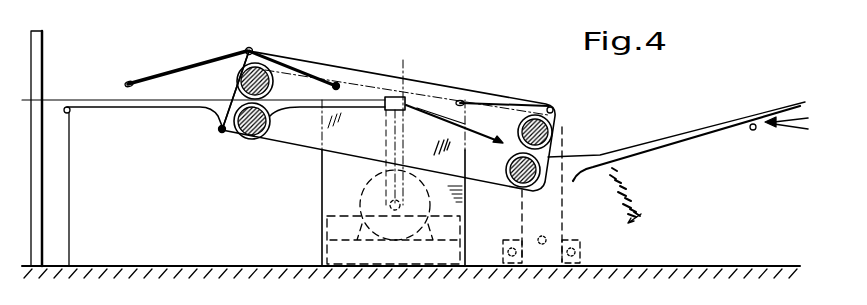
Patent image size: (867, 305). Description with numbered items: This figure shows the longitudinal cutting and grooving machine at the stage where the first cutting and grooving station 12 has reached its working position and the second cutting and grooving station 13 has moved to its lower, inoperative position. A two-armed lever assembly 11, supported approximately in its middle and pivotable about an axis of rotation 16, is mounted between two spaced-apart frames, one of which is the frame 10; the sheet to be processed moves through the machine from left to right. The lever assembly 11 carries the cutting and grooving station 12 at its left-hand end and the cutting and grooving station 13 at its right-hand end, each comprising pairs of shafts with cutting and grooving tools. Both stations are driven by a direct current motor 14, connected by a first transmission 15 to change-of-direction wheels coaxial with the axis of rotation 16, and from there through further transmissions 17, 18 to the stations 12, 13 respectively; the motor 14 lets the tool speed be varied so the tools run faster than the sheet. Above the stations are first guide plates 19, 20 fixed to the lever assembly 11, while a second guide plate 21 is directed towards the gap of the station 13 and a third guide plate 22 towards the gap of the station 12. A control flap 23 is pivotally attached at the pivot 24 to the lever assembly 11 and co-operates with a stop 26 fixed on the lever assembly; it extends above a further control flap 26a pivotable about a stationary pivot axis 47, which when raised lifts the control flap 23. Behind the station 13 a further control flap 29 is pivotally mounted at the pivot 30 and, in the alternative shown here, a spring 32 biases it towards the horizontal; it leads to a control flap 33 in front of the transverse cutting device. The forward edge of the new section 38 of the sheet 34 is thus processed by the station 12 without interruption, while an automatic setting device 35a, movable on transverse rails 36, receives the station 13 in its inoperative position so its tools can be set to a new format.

The frame 10 is at (322, 228).
The lever assembly 11 is at (432, 81).
The cutting and grooving station 12 is at (221, 132).
The cutting and grooving station 13 is at (506, 176).
The direct current motor 14 is at (361, 195).
The first transmission 15 is at (380, 148).
The axis of rotation 16 is at (402, 75).
The further transmission 17 is at (292, 90).
The further transmission 18 is at (502, 100).
The first guide plate 19 is at (321, 75).
The first guide plate 20 is at (520, 100).
The second guide plate 21 is at (470, 137).
The third guide plate 22 is at (308, 108).
The control flap 23 is at (160, 68).
The pivot 24 is at (250, 47).
The stop 26 is at (233, 63).
The further control flap 26a is at (148, 109).
The further control flap 29 is at (688, 145).
The pivot 30 is at (754, 130).
The spring 32 is at (643, 200).
The control flap 33 is at (783, 112).
The sheet 34 is at (583, 155).
The automatic setting device 35a is at (563, 208).
The transverse rails 36 is at (582, 250).
The new section of the sheet 38 is at (58, 100).
The stationary pivot axis 47 is at (70, 114).